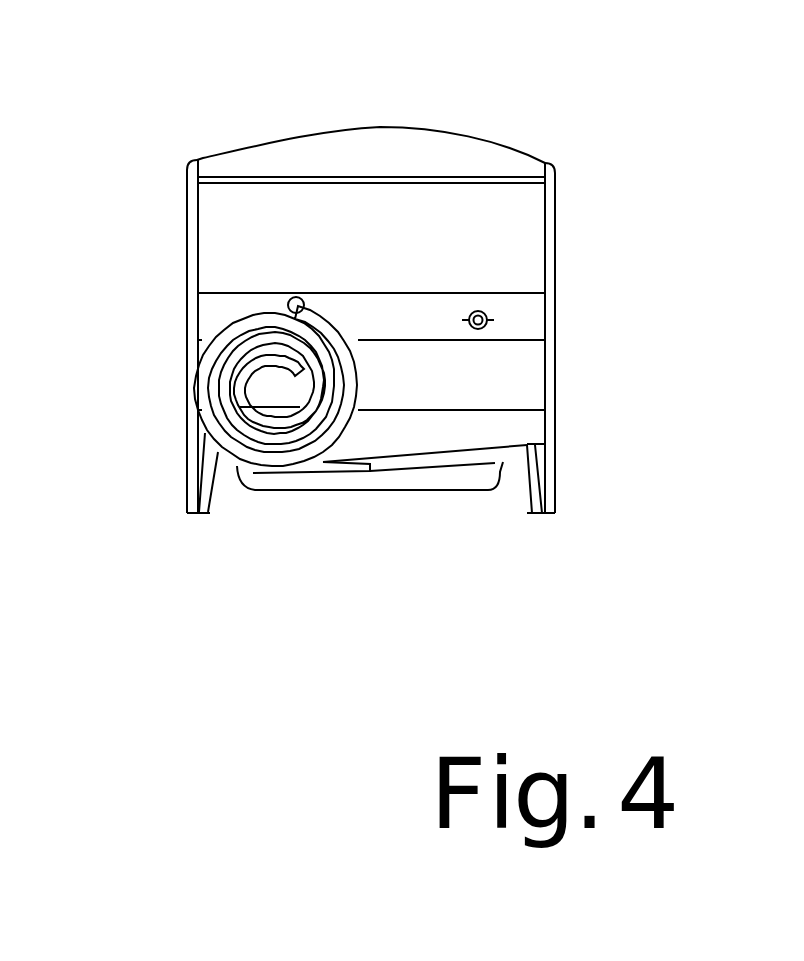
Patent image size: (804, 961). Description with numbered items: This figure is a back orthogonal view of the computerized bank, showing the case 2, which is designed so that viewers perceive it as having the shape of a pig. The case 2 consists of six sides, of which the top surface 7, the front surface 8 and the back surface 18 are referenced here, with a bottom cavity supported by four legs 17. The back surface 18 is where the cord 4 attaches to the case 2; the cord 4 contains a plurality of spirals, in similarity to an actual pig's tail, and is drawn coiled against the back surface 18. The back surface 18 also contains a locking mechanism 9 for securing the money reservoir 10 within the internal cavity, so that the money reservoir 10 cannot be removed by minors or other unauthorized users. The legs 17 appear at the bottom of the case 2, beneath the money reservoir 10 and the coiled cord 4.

The case 2 is at (187, 202).
The cord 4 is at (203, 357).
The top surface 7 is at (347, 162).
The front surface 8 is at (487, 247).
The locking mechanism 9 is at (503, 317).
The money reservoir 10 is at (460, 494).
The legs 17 is at (185, 473).
The back surface 18 is at (647, 177).